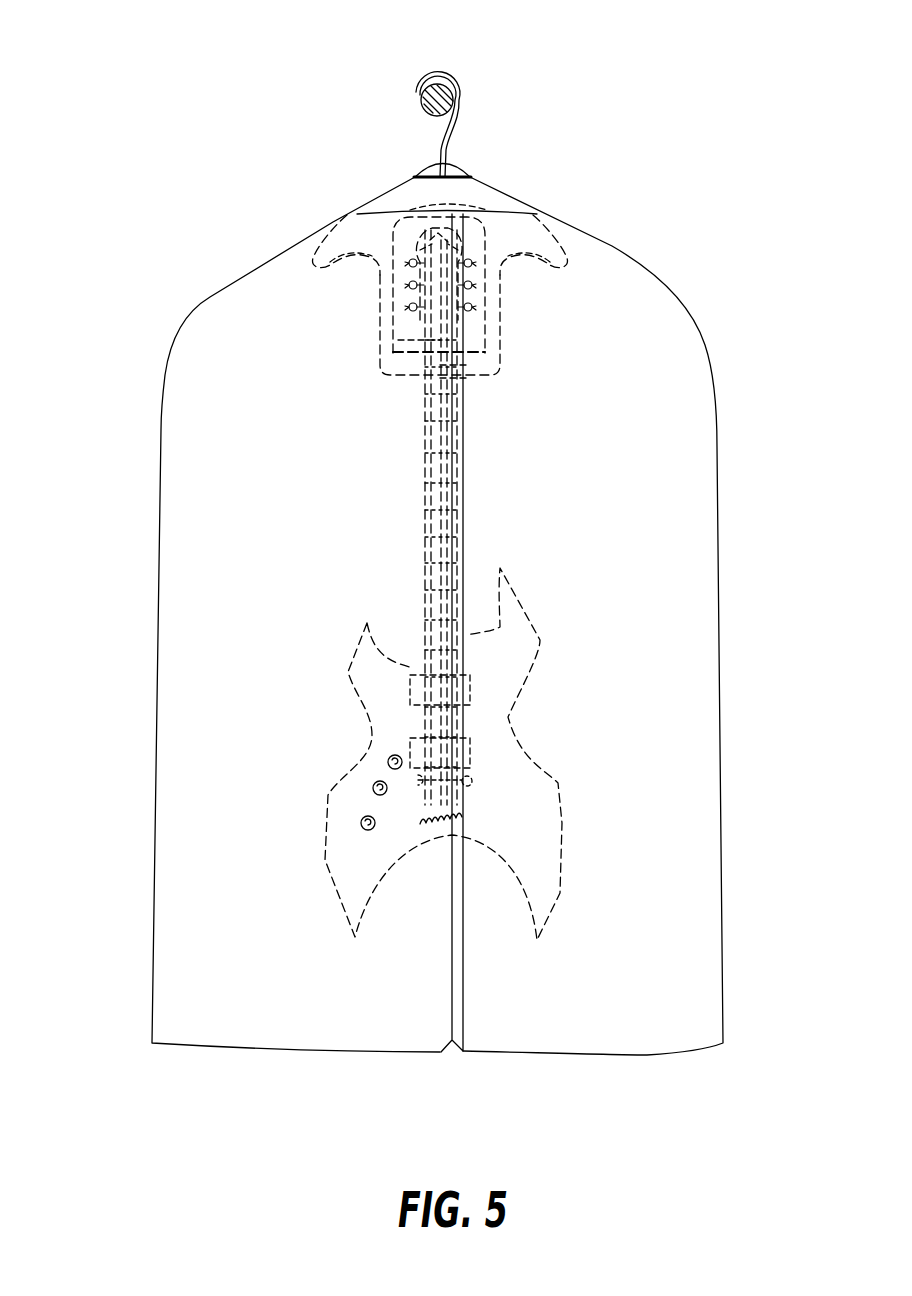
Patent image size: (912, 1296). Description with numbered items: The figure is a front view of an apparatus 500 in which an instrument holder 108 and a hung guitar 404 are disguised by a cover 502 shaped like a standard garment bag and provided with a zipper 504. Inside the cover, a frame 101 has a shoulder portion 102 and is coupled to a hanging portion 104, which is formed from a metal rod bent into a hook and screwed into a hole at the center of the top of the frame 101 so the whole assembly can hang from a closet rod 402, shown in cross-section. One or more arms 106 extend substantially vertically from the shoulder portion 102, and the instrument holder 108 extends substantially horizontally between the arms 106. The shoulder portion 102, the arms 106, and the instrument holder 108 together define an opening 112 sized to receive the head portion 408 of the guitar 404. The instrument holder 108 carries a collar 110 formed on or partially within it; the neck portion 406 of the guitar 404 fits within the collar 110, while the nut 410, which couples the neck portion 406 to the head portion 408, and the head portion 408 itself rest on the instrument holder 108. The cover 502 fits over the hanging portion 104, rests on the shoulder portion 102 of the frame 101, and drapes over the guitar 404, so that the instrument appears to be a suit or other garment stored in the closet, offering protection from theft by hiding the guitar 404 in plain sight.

The apparatus 500 is at (78, 32).
The cover 502 is at (213, 297).
The zipper 504 is at (460, 982).
The frame 101 is at (408, 190).
The shoulder portion 102 is at (347, 222).
The hanging portion 104 is at (453, 130).
The arms 106 is at (502, 310).
The instrument holder 108 is at (393, 380).
The collar 110 is at (455, 380).
The opening 112 is at (415, 335).
The closet rod 402 is at (420, 110).
The guitar 404 is at (330, 650).
The neck portion 406 is at (447, 510).
The head portion 408 is at (477, 217).
The nut 410 is at (453, 352).